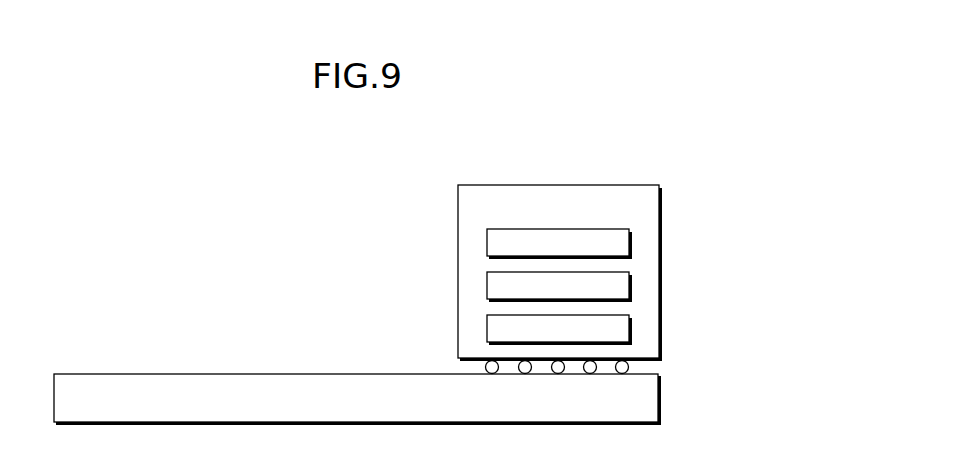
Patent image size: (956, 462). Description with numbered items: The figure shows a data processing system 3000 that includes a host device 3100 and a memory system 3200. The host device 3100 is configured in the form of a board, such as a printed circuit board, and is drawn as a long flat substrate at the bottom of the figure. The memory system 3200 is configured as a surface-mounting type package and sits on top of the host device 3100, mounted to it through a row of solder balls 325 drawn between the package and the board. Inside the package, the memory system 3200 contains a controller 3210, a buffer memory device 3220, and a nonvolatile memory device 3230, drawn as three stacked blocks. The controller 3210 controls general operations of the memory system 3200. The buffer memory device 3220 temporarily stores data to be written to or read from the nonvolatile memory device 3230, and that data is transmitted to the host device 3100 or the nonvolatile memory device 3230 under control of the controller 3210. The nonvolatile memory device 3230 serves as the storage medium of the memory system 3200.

The data processing system 3000 is at (132, 157).
The host device 3100 is at (357, 399).
The memory system 3200 is at (560, 273).
The controller 3210 is at (559, 244).
The buffer memory device 3220 is at (559, 287).
The nonvolatile memory device 3230 is at (559, 330).
The solder balls 325 is at (642, 368).